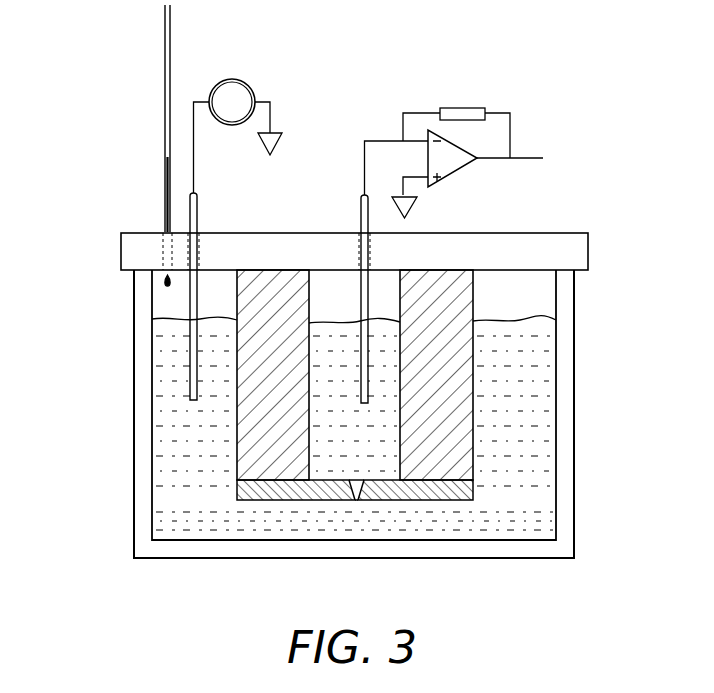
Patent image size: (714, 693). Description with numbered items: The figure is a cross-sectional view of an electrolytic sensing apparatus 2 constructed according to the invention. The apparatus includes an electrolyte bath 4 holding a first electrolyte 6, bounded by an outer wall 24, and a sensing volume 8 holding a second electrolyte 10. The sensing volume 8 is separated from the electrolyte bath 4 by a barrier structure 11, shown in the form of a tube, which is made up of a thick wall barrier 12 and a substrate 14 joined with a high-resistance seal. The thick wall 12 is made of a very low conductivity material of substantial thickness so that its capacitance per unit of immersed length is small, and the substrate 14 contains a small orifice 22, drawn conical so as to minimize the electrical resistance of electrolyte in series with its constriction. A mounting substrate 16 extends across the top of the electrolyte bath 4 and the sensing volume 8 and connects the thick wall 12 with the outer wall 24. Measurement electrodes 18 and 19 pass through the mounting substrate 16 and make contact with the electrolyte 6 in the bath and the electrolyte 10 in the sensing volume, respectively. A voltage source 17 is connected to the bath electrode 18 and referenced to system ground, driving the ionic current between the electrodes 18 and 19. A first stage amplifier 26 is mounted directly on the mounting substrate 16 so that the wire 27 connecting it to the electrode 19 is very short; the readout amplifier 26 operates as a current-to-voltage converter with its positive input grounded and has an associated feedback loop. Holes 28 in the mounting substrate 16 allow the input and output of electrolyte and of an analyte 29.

The electrolytic sensing apparatus 2 is at (539, 564).
The electrolyte bath 4 is at (210, 505).
The first electrolyte 6 is at (533, 320).
The sensing volume 8 is at (327, 458).
The second electrolyte 10 is at (330, 320).
The barrier structure 11 is at (480, 467).
The thick wall barrier 12 is at (457, 405).
The substrate 14 is at (437, 487).
The mounting substrate 16 is at (128, 250).
The voltage source 17 is at (236, 80).
The measurement electrode 18 is at (198, 227).
The measurement electrode 19 is at (362, 226).
The orifice 22 is at (353, 499).
The outer wall 24 is at (142, 495).
The first stage amplifier 26 is at (453, 163).
The wire 27 is at (377, 136).
The holes 28 is at (165, 232).
The analyte 29 is at (164, 190).